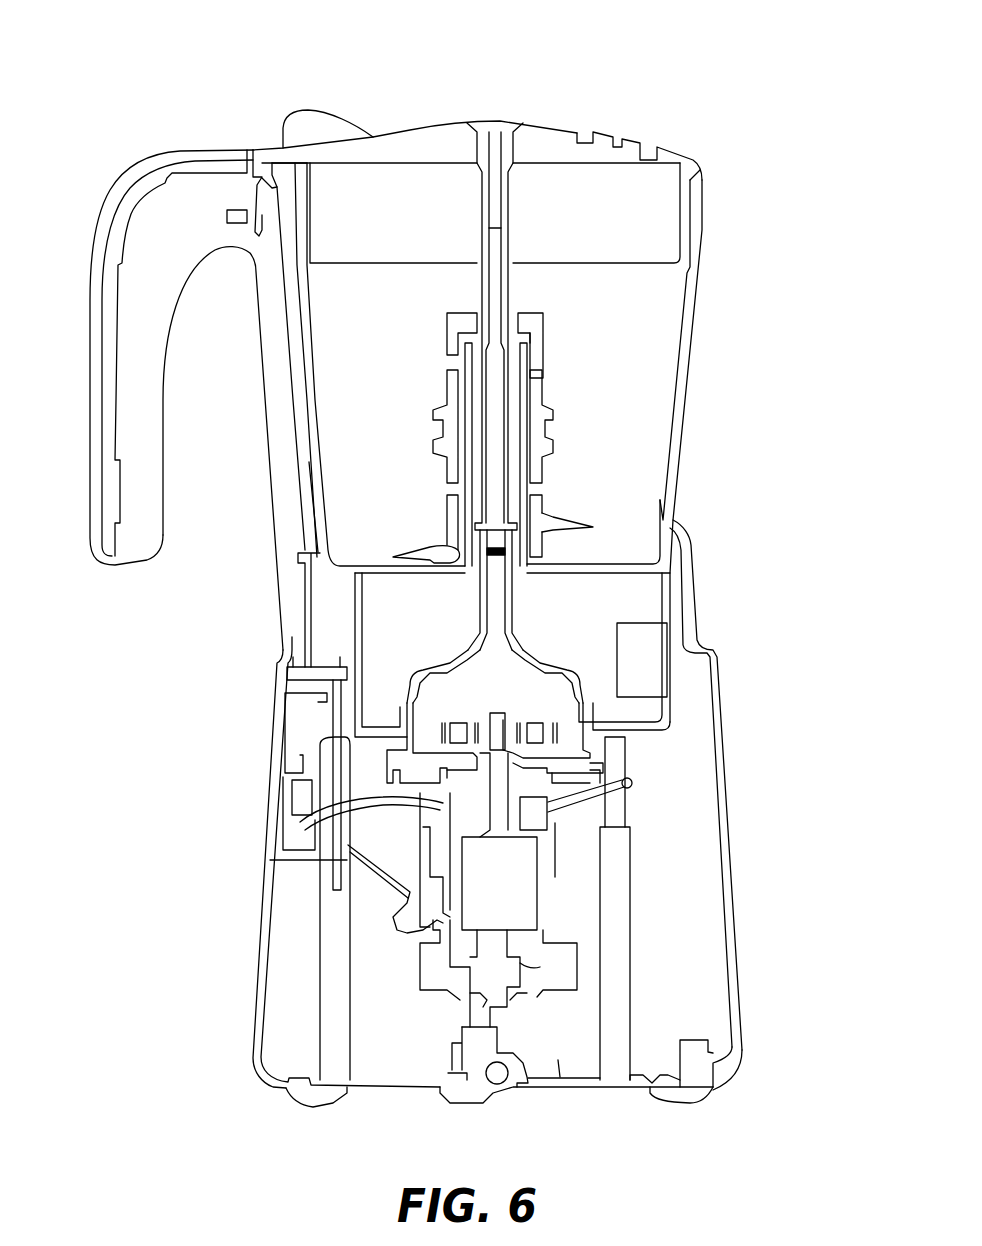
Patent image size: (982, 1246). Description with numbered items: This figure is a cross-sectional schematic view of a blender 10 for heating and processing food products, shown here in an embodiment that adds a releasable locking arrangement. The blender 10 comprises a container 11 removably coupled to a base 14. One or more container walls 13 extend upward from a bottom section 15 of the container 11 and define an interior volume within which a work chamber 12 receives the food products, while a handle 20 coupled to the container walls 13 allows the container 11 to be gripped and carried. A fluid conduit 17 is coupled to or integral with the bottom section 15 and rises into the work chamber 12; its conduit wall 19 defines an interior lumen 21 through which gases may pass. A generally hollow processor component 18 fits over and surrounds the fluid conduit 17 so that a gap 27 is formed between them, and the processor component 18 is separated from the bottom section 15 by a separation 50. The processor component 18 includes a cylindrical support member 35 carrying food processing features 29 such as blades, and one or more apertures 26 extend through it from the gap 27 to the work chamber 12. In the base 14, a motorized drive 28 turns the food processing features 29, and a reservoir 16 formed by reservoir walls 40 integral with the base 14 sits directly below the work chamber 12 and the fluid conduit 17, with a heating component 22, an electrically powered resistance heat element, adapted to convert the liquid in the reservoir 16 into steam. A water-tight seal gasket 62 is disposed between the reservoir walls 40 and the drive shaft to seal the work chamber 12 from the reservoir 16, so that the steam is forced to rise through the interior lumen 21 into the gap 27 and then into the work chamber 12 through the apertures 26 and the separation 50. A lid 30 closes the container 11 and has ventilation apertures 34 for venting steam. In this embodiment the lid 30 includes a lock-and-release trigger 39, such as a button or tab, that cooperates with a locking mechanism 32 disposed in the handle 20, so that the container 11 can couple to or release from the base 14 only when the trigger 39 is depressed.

The blender 10 is at (149, 67).
The container 11 is at (740, 299).
The work chamber 12 is at (656, 327).
The container wall 13 is at (697, 350).
The base 14 is at (765, 758).
The bottom section 15 is at (705, 536).
The reservoir 16 is at (589, 627).
The fluid conduit 17 is at (482, 335).
The processor component 18 is at (405, 440).
The conduit wall 19 is at (528, 483).
The handle 20 is at (135, 180).
The interior lumen 21 is at (475, 560).
The heating component 22 is at (657, 637).
The aperture 26 is at (447, 364).
The gap 27 is at (513, 341).
The motorized drive 28 is at (522, 858).
The food processing feature 29 is at (418, 545).
The lid 30 is at (443, 128).
The locking mechanism 32 is at (300, 625).
The ventilation aperture 34 is at (648, 143).
The cylindrical support member 35 is at (543, 333).
The lock-and-release trigger 39 is at (310, 122).
The reservoir wall 40 is at (360, 627).
The separation 50 is at (545, 557).
The water-tight seal gasket 62 is at (495, 561).